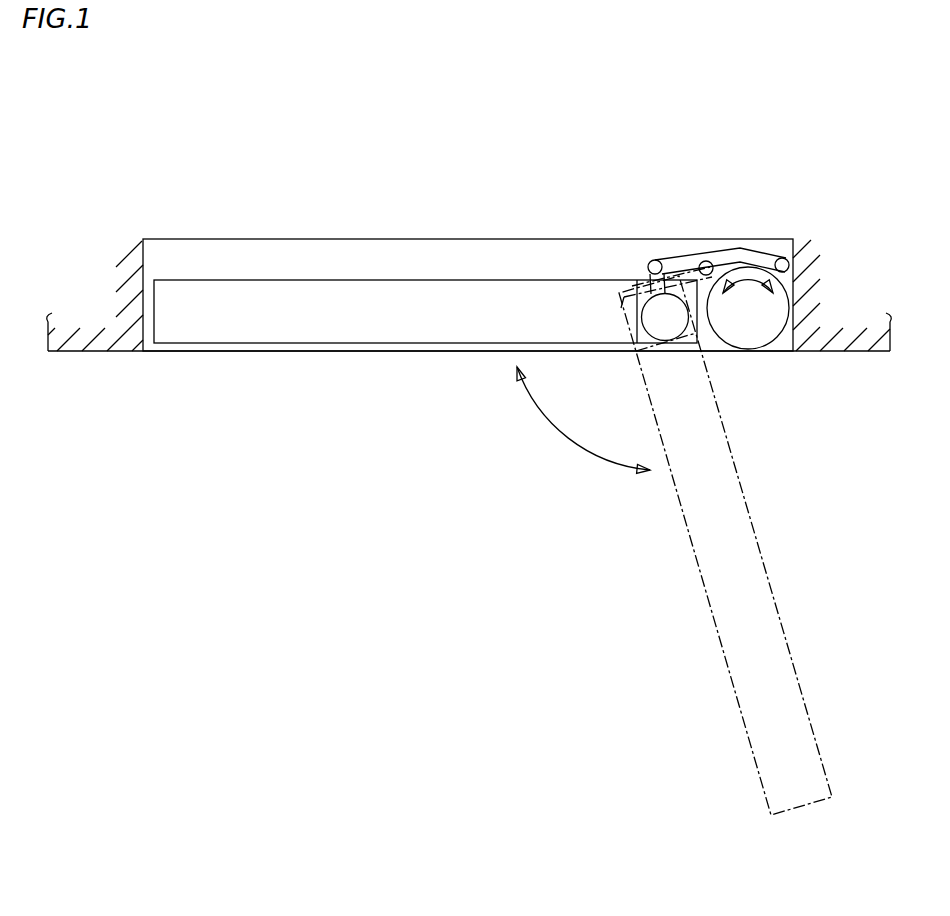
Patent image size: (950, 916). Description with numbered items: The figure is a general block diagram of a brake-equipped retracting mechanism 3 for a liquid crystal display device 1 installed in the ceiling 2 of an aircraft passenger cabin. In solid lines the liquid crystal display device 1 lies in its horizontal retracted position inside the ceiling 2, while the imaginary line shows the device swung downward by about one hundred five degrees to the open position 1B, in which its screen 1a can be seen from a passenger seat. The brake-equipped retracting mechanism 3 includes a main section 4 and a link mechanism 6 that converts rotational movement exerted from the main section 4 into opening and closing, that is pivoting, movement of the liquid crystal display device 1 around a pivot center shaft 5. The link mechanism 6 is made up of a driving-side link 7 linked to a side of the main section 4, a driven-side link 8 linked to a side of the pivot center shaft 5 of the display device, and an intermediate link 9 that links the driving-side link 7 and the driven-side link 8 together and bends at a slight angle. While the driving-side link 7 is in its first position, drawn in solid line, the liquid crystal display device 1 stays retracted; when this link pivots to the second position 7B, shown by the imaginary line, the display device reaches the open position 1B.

The liquid crystal display device 1 is at (410, 278).
The open position 1B is at (779, 638).
The screen 1a is at (312, 280).
The ceiling 2 is at (93, 250).
The brake-equipped retracting mechanism 3 is at (763, 222).
The main section 4 is at (794, 278).
The pivot center shaft 5 is at (668, 327).
The link mechanism 6 is at (663, 258).
The driving-side link 7 is at (787, 259).
The second position 7B is at (712, 256).
The driven-side link 8 is at (648, 263).
The intermediate link 9 is at (722, 262).